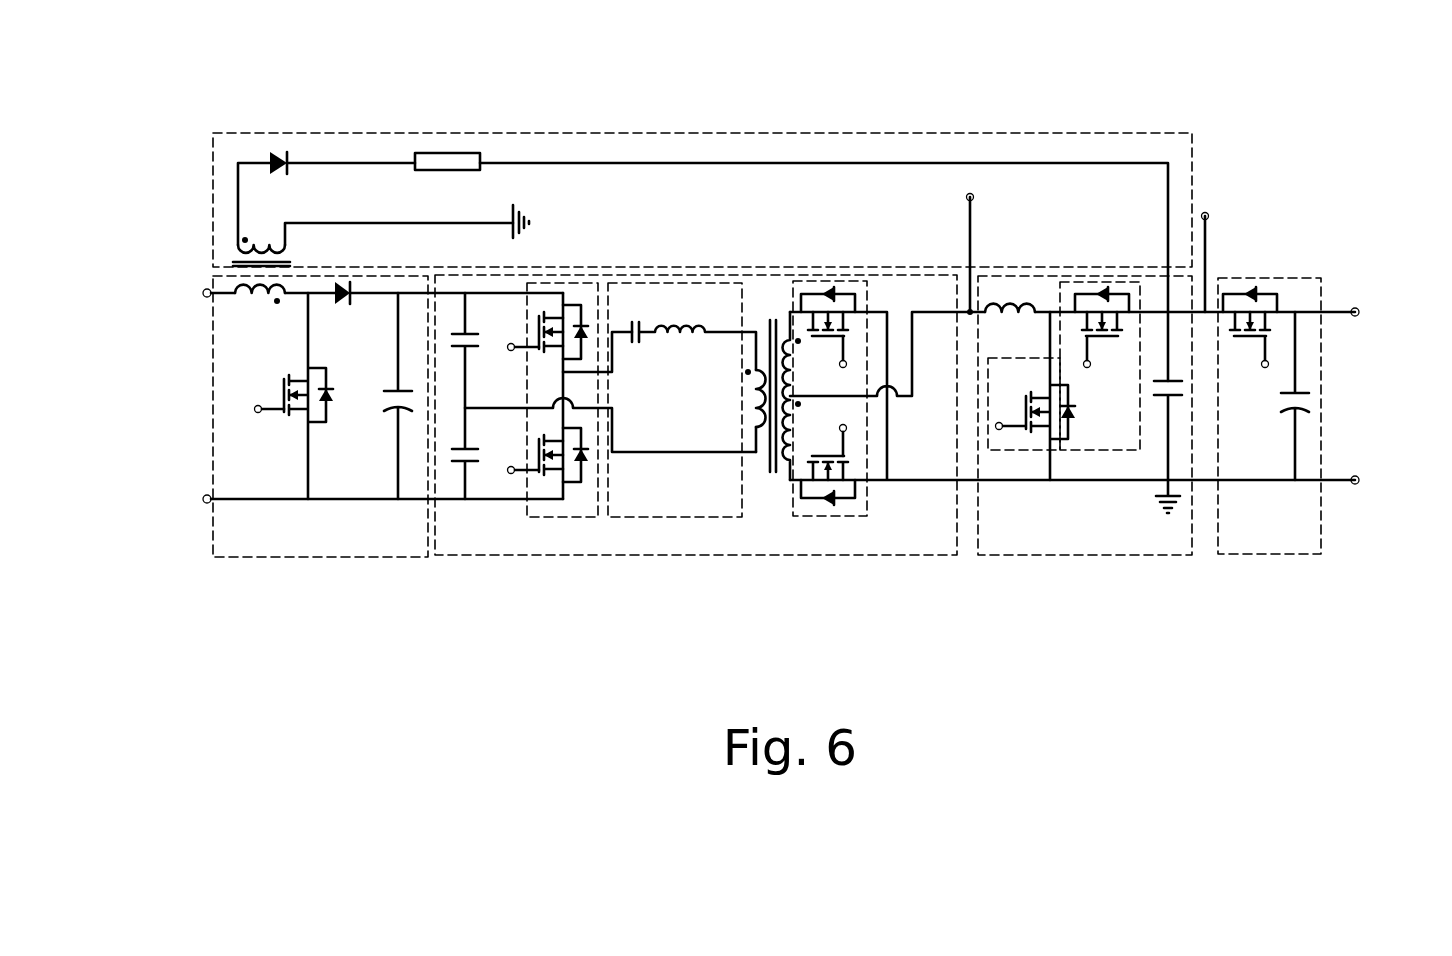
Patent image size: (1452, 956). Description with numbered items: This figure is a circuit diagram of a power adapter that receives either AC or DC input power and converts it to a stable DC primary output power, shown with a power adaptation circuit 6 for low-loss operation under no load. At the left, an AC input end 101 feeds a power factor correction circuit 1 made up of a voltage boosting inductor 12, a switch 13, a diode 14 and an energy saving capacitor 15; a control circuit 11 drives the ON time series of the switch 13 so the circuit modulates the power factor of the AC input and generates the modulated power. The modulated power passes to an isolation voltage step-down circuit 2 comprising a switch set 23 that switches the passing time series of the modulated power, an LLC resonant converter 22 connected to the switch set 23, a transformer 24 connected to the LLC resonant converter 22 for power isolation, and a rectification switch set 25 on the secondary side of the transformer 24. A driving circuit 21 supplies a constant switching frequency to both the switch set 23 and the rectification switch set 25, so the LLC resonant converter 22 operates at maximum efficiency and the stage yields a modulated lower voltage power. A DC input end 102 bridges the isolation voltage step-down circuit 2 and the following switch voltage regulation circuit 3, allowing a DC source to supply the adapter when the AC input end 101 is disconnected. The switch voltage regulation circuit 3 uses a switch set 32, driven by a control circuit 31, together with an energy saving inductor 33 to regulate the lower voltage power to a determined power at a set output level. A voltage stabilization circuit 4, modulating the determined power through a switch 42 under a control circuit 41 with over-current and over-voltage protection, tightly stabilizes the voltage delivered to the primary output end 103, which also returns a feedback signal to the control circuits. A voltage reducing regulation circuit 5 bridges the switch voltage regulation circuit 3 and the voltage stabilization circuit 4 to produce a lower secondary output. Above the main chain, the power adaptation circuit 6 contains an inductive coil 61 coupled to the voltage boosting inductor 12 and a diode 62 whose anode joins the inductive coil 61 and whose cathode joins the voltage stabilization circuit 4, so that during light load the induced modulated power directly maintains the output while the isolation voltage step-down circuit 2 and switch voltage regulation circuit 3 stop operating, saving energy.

The power factor correction circuit 1 is at (258, 559).
The isolation voltage step-down circuit 2 is at (927, 557).
The switch voltage regulation circuit 3 is at (1125, 557).
The voltage stabilization circuit 4 is at (1250, 556).
The voltage reducing regulation circuit 5 is at (1205, 212).
The power adaptation circuit 6 is at (213, 188).
The control circuit 11 is at (257, 413).
The voltage boosting inductor 12 is at (270, 302).
The switch 13 is at (322, 425).
The diode 14 is at (340, 303).
The energy saving capacitor 15 is at (395, 412).
The driving circuit 21 is at (509, 473).
The LLC resonant converter 22 is at (680, 519).
The switch set 23 is at (558, 519).
The transformer 24 is at (773, 482).
The rectification switch set 25 is at (830, 519).
The control circuit 31 is at (1087, 367).
The switch set 32 is at (1113, 452).
The energy saving inductor 33 is at (1007, 296).
The control circuit 41 is at (1269, 364).
The switch 42 is at (1266, 292).
The inductive coil 61 is at (247, 244).
The diode 62 is at (275, 148).
The AC input end 101 is at (204, 496).
The DC input end 102 is at (965, 197).
The primary output end 103 is at (1358, 315).